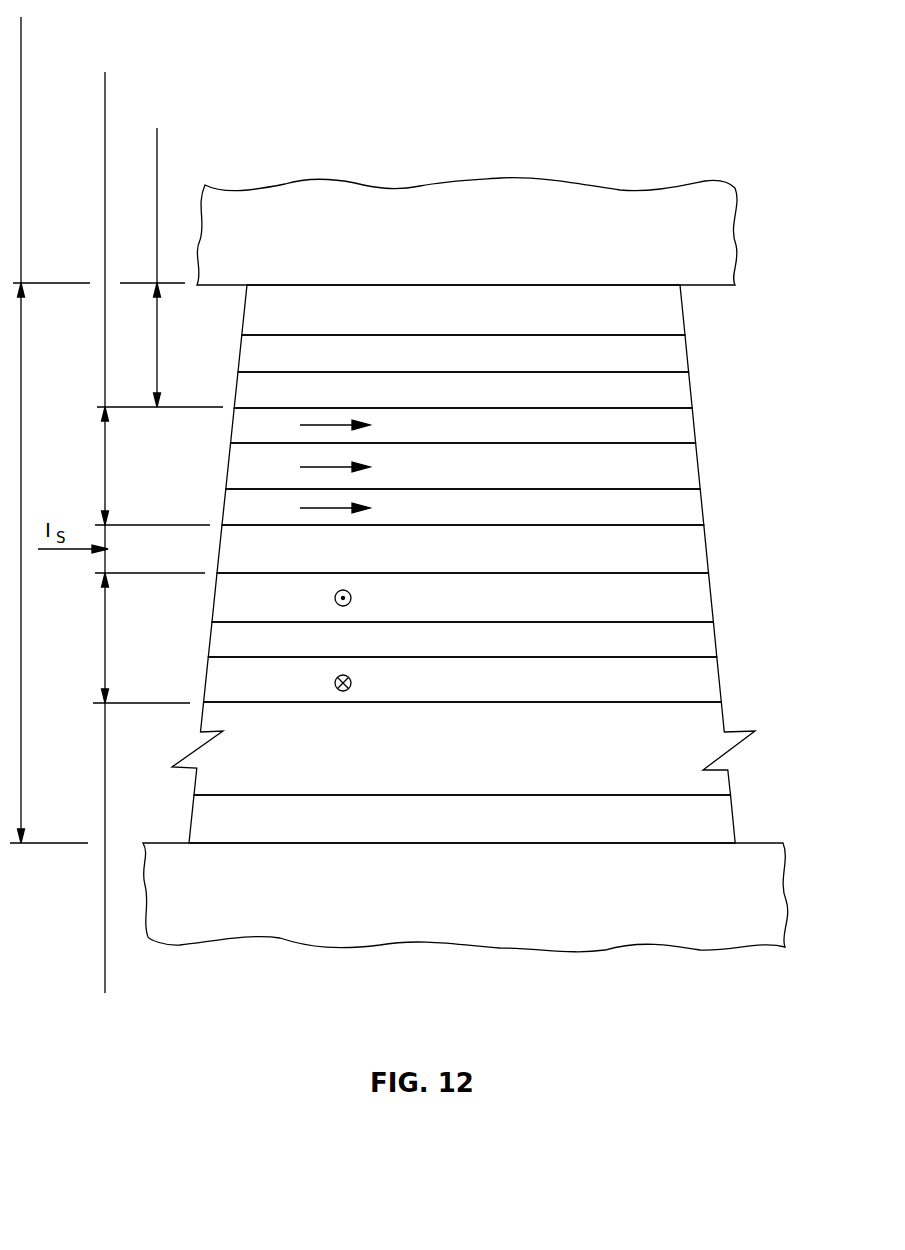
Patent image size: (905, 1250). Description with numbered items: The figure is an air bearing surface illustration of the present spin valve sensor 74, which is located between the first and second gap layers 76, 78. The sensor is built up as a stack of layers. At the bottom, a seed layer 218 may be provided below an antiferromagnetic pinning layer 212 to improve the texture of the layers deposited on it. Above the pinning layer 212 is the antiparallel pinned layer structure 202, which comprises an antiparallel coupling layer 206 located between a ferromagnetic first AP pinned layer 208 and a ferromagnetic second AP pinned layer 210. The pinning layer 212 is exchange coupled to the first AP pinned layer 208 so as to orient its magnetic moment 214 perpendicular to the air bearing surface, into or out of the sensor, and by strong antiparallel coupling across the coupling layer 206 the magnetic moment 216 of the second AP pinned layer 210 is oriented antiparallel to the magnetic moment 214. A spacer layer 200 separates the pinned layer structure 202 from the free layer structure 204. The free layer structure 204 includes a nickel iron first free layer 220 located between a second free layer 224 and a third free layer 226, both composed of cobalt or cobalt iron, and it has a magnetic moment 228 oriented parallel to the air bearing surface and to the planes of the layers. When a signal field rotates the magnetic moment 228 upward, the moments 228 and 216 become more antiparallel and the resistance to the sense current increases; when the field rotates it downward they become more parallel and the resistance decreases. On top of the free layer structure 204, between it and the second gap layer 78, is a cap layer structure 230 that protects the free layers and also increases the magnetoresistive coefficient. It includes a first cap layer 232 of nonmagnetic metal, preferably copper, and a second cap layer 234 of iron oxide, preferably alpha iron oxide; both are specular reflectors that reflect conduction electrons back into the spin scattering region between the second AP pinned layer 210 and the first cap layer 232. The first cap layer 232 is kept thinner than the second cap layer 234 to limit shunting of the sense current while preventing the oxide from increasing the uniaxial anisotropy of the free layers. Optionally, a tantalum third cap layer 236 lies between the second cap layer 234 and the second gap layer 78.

The spin valve sensor 74 is at (21, 17).
The first gap layer 76 is at (737, 936).
The second gap layer 78 is at (722, 213).
The spacer layer 200 is at (706, 546).
The antiparallel pinned layer structure 202 is at (105, 993).
The free layer structure 204 is at (105, 72).
The antiparallel coupling layer 206 is at (715, 640).
The first AP pinned layer 208 is at (719, 680).
The second AP pinned layer 210 is at (711, 600).
The antiferromagnetic pinning layer 212 is at (723, 716).
The magnetic moment of the first AP pinned layer 214 is at (334, 683).
The magnetic moment of the second AP pinned layer 216 is at (334, 598).
The seed layer 218 is at (732, 813).
The first free layer 220 is at (698, 466).
The second free layer 224 is at (702, 506).
The third free layer 226 is at (694, 425).
The magnetic moment of the free layer structure 228 is at (313, 508).
The cap layer structure 230 is at (157, 128).
The first cap layer 232 is at (690, 387).
The second cap layer 234 is at (687, 352).
The third cap layer 236 is at (683, 316).